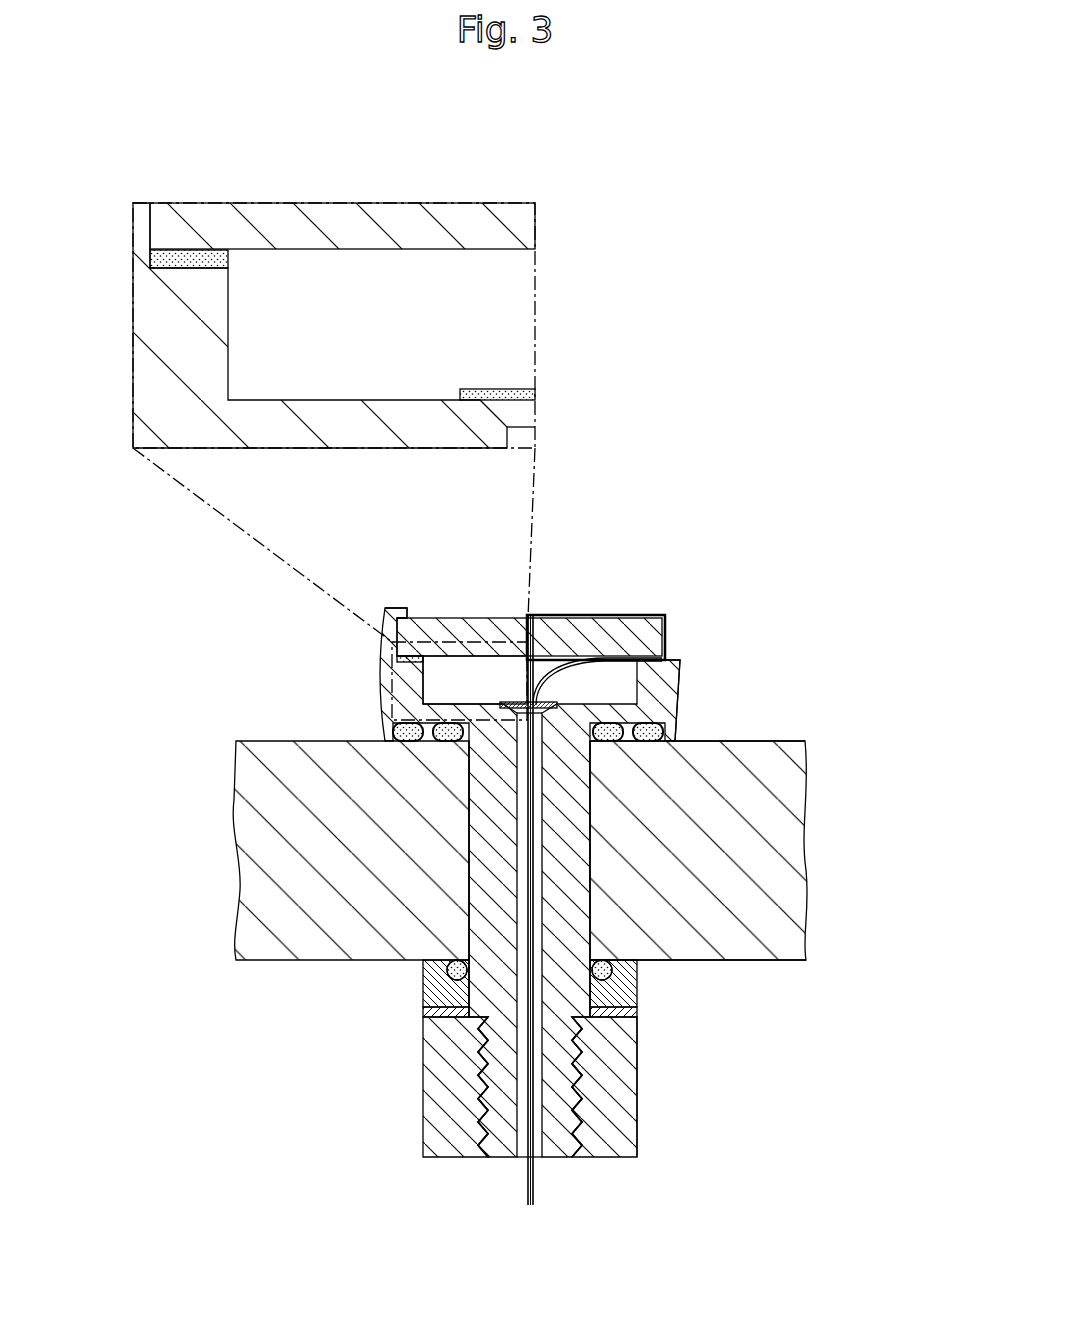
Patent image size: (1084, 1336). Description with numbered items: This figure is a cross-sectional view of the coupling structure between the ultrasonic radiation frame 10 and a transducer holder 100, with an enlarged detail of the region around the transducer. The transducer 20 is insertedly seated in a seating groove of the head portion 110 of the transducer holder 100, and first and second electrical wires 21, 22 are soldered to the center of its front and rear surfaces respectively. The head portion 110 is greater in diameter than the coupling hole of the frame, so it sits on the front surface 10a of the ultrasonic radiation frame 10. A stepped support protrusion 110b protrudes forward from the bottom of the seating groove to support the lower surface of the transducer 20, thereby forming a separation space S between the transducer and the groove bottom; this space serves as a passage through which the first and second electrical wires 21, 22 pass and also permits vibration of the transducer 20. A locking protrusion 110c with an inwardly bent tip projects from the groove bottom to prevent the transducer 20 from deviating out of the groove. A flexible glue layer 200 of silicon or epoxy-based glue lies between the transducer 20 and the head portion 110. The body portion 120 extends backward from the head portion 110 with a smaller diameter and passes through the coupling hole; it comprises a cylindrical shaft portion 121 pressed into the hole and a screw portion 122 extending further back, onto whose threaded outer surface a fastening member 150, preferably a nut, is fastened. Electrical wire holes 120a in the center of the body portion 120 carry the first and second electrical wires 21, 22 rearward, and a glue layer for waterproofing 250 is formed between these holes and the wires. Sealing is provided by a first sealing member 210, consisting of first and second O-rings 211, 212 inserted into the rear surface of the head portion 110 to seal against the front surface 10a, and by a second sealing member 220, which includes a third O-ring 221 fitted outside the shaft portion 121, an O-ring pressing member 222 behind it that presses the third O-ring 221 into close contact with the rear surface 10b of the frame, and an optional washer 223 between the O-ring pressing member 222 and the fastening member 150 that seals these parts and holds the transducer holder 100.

The ultrasonic radiation frame 10 is at (282, 733).
The front surface 10a is at (747, 741).
The rear surface 10b is at (783, 960).
The transducer 20 is at (383, 227).
The first electrical wire 21 is at (637, 613).
The second electrical wire 22 is at (545, 660).
The transducer holder 100 is at (198, 1057).
The head portion 110 is at (383, 662).
The support protrusion 110b is at (677, 662).
The locking protrusion 110c is at (402, 608).
The body portion 120 is at (423, 1096).
The electrical wire holes 120a is at (538, 1160).
The shaft portion 121 is at (477, 883).
The screw portion 122 is at (483, 1097).
The fastening member 150 is at (637, 1120).
The flexible glue layer 200 is at (200, 253).
The glue layer for waterproofing 250 is at (503, 387).
The first sealing member 210 is at (618, 685).
The first O-ring 211 is at (677, 723).
The second O-ring 212 is at (673, 727).
The second sealing member 220 is at (752, 1002).
The third O-ring 221 is at (606, 960).
The O-ring pressing member 222 is at (635, 993).
The washer 223 is at (638, 1017).
The separation space s is at (483, 670).